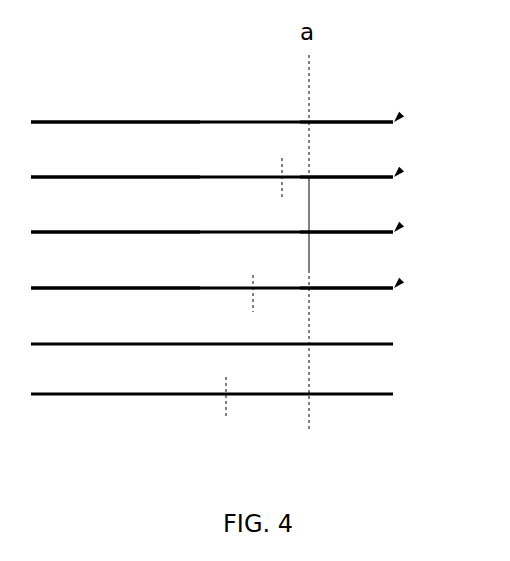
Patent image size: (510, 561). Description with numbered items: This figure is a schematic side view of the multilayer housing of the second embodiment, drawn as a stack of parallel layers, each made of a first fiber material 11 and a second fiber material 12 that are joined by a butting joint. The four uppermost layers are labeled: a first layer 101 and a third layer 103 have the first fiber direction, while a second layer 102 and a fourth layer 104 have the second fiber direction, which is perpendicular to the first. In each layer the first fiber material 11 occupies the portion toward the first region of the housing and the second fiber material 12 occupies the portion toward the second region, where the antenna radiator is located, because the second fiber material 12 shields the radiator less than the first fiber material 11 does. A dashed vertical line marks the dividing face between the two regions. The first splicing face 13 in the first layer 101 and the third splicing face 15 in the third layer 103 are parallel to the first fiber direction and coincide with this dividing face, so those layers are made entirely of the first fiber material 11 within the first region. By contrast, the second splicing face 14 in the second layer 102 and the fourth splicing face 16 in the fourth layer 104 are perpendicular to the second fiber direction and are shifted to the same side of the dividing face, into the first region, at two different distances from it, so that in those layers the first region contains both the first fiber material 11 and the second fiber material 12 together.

The first fiber material 11 is at (168, 120).
The second fiber material 12 is at (367, 120).
The first splicing face 13 is at (308, 120).
The second splicing face 14 is at (282, 176).
The third splicing face 15 is at (308, 231).
The fourth splicing face 16 is at (252, 287).
The first layer 101 is at (401, 114).
The second layer 102 is at (401, 169).
The third layer 103 is at (401, 224).
The fourth layer 104 is at (401, 280).